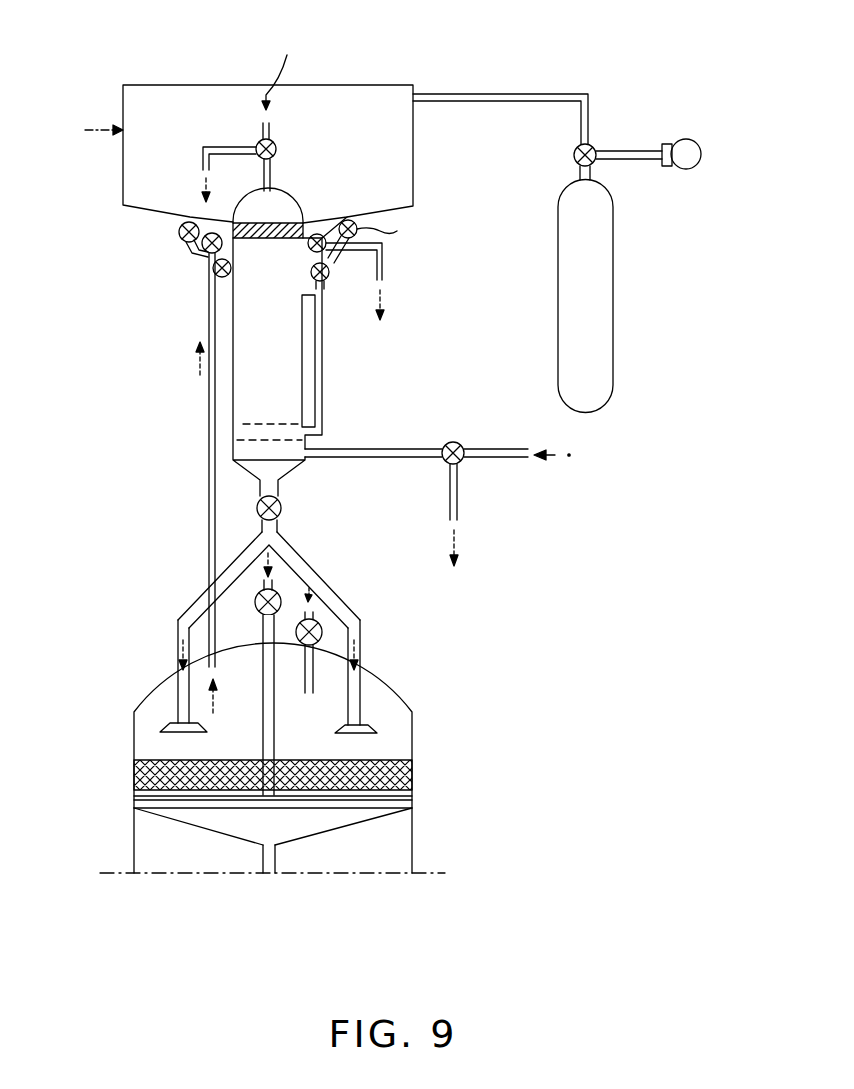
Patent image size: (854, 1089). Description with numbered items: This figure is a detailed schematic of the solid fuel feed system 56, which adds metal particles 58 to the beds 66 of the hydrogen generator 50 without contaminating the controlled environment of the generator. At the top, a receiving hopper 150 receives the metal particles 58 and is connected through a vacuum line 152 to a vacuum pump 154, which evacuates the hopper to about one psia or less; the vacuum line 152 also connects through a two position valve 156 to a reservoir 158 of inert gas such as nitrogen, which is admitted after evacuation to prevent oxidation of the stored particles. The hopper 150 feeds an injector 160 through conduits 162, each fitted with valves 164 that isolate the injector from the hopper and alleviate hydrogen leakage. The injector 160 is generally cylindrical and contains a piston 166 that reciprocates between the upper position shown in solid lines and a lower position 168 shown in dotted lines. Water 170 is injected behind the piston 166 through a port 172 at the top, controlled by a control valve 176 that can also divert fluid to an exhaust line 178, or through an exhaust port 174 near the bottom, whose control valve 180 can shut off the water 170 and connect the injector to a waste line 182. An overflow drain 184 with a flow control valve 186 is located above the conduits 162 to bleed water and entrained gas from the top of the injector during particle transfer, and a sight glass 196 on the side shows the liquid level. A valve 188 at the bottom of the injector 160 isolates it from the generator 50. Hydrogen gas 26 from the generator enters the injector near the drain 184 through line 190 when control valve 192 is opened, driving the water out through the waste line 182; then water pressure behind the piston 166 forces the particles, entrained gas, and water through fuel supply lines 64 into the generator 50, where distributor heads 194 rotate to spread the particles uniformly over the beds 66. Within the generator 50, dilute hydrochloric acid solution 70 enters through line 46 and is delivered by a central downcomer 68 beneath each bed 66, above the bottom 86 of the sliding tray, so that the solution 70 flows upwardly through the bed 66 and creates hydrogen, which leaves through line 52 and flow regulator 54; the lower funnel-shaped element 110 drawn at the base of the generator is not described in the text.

The hydrogen gas 26 is at (317, 600).
The line 46 is at (262, 629).
The hydrogen generator 50 is at (501, 837).
The line 52 is at (304, 691).
The flow regulator 54 is at (323, 628).
The solid fuel feed system 56 is at (365, 53).
The metal particles 58 is at (360, 650).
The fuel supply lines 64 is at (325, 583).
The bed 66 is at (414, 775).
The downcomer 68 is at (263, 858).
The hydrochloric acid solution 70 is at (278, 557).
The bottom of the sliding tray 86 is at (162, 797).
The funnel bottom 110 is at (367, 823).
The receiving hopper 150 is at (157, 83).
The vacuum line 152 is at (526, 94).
The vacuum pump 154 is at (697, 143).
The two position valve 156 is at (595, 145).
The reservoir 158 is at (614, 314).
The injector 160 is at (233, 397).
The conduits 162 is at (202, 245).
The valves 164 is at (178, 232).
The piston 166 is at (285, 222).
The lower position 168 is at (237, 422).
The water 170 is at (562, 476).
The port 172 is at (272, 178).
The exhaust port 174 is at (388, 458).
The control valve 176 is at (257, 143).
The exhaust line 178 is at (200, 148).
The control valve 180 is at (453, 442).
The waste line 182 is at (460, 508).
The overflow drain 184 is at (384, 272).
The flow control valve 186 is at (318, 233).
The valve 188 is at (283, 510).
The line 190 is at (208, 538).
The control valve 192 is at (231, 268).
The distributor heads 194 is at (162, 726).
The sight glass 196 is at (318, 375).